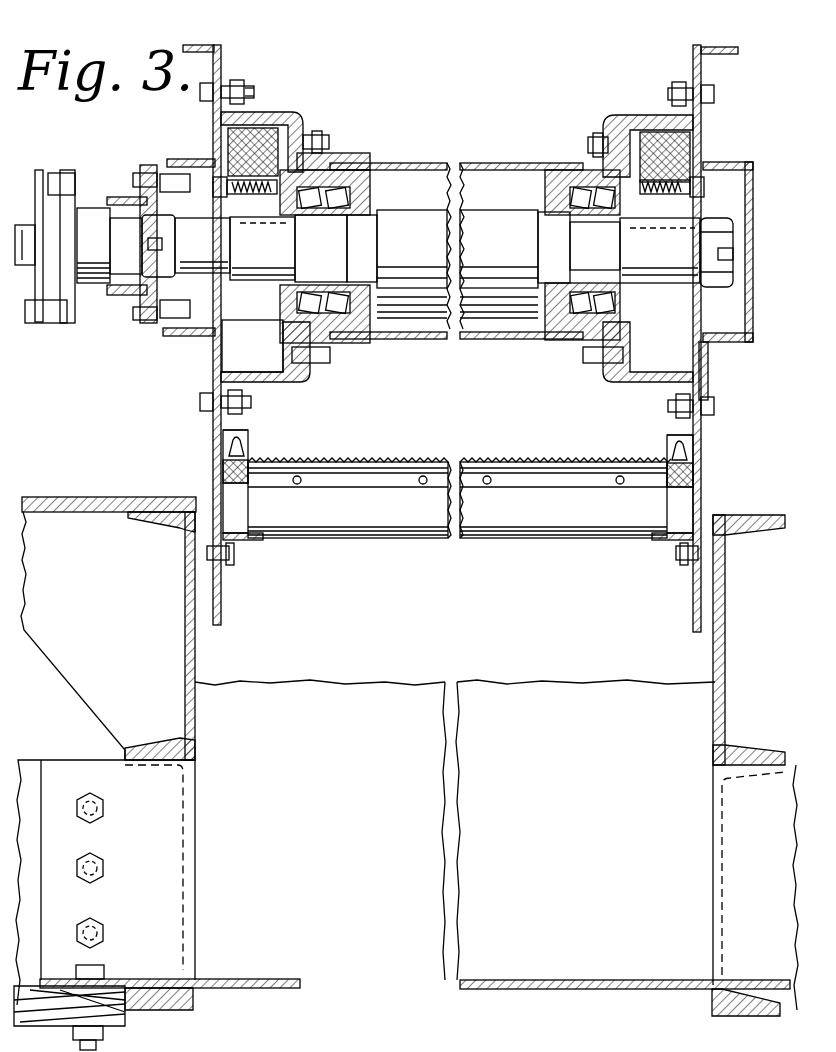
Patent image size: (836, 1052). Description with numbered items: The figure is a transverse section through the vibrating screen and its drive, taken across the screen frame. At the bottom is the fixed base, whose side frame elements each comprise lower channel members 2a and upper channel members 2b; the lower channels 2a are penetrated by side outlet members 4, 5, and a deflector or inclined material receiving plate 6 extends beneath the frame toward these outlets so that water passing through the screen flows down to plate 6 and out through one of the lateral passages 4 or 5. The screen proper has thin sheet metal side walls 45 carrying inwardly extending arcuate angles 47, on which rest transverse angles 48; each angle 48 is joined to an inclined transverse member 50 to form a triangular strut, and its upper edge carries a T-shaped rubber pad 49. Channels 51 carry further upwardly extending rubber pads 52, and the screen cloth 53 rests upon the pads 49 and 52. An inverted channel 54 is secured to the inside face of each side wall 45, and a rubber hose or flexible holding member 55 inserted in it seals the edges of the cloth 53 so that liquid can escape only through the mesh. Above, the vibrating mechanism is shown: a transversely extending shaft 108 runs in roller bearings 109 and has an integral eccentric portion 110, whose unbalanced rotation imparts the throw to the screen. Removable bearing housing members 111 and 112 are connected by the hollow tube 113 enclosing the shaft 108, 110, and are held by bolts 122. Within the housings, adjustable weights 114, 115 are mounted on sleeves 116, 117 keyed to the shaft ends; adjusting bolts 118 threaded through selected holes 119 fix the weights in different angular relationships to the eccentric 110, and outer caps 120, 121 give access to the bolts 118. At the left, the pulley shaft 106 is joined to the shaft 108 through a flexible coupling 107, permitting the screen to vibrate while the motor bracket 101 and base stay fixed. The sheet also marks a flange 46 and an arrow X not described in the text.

The flange 46 is at (203, 45).
The side walls 45 is at (223, 62).
The bolts 122 is at (255, 92).
The bearing housing member 111 is at (292, 120).
The bearing housing member 112 is at (640, 118).
The adjustable weight 114 is at (250, 150).
The adjustable weight 115 is at (690, 148).
The adjusting bolts 118 is at (218, 185).
The outer cap 121 is at (200, 340).
The eccentric portion 110 is at (480, 325).
The transversely extending shaft 108 is at (325, 315).
The roller bearings 109 is at (338, 178).
The hollow tube 113 is at (448, 162).
The sleeve 116 is at (262, 272).
The sleeve 117 is at (622, 272).
The holes 119 is at (232, 325).
The outer cap 120 is at (745, 342).
The direction arrow X is at (776, 250).
The shaft 106 is at (20, 265).
The flexible coupling 107 is at (140, 300).
The rubber pads 52 is at (225, 472).
The rubber hose 55 is at (244, 452).
The inverted channel 54 is at (250, 432).
The channels 51 is at (235, 485).
The transverse angles 48 is at (432, 540).
The rubber pads 49 is at (400, 493).
The inclined transverse member 50 is at (480, 522).
The screen cloth 53 is at (475, 460).
The angles 47 is at (245, 541).
The bracket 101 is at (65, 497).
The upper channel members 2b is at (743, 642).
The side outlet member 4 is at (175, 905).
The side outlet member 5 is at (735, 912).
The deflector 6 is at (482, 692).
The lower channel members 2a is at (195, 1000).